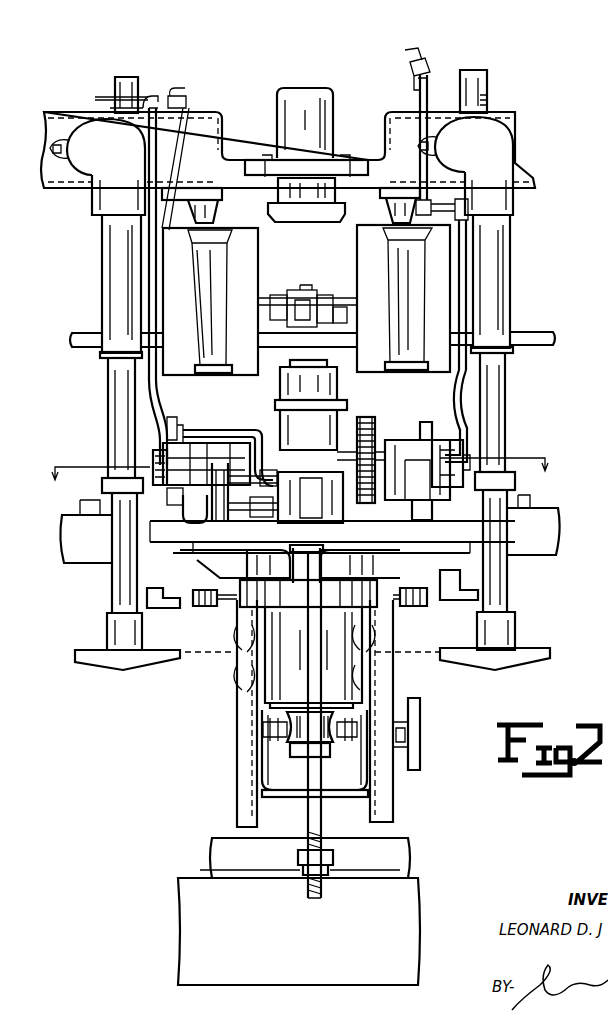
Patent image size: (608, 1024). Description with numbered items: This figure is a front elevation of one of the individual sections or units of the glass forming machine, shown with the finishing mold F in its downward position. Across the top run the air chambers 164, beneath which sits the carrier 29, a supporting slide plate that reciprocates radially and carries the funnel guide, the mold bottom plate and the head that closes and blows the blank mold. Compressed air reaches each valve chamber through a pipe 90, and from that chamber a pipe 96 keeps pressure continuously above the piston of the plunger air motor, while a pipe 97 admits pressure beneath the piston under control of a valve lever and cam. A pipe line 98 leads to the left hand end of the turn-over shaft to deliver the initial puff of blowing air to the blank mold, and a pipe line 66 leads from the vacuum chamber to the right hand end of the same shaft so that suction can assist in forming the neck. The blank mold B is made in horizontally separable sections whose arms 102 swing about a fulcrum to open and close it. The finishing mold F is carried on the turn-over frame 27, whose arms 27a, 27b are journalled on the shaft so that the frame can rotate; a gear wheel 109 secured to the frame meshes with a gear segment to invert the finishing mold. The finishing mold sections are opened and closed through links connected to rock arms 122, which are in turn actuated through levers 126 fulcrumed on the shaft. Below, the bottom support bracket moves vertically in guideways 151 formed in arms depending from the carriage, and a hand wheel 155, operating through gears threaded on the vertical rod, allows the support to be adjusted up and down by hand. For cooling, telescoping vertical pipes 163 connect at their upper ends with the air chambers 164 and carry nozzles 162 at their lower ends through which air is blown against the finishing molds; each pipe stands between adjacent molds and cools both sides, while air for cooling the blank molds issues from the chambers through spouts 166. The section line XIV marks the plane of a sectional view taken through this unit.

The air chamber 164 is at (215, 117).
The pipe 90 is at (138, 80).
The carrier 29 is at (270, 167).
The pipe line 98 is at (150, 148).
The vertical pipe 163 is at (120, 592).
The pipe 97 is at (172, 163).
The spout 166 is at (214, 208).
The pipe line 66 is at (418, 60).
The blank mold B is at (355, 262).
The arm 102 is at (270, 300).
The gear wheel 109 is at (363, 417).
The pipe 96 is at (236, 430).
The arm 27b is at (218, 450).
The lever 126 is at (418, 462).
The turn-over frame 27 is at (165, 535).
The arm 27a is at (393, 521).
The rock arm 122 is at (183, 608).
The nozzle 162 is at (92, 652).
The finishing mold F is at (275, 688).
The guideway 151 is at (373, 809).
The hand wheel 155 is at (420, 708).
The section line XIV is at (299, 481).